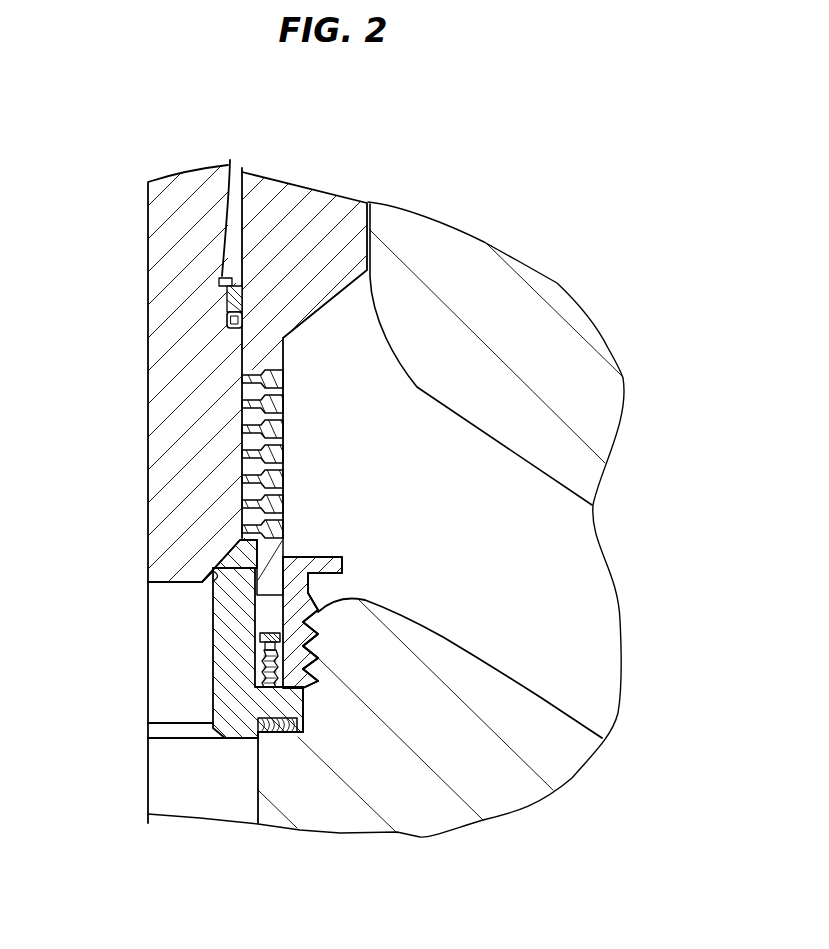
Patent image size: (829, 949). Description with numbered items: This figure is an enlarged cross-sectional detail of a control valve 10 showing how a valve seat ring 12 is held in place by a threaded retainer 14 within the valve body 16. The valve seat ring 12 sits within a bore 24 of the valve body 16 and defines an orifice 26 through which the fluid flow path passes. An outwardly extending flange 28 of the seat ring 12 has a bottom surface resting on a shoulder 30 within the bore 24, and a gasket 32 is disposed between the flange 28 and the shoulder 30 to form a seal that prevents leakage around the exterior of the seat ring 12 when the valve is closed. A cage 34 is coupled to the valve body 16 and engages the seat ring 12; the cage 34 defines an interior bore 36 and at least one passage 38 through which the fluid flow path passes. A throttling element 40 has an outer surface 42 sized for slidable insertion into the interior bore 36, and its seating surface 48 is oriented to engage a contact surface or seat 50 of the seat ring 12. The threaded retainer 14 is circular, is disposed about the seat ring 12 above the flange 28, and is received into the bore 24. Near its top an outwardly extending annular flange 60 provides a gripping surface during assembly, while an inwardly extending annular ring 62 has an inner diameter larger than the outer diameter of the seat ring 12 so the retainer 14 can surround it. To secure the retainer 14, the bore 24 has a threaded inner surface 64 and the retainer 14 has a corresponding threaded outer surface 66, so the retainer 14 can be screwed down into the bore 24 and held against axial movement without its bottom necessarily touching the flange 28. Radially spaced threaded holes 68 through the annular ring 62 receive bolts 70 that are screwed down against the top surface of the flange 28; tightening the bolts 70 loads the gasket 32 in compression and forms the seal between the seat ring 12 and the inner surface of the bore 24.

The control valve 10 is at (565, 167).
The valve seat ring 12 is at (225, 622).
The threaded retainer 14 is at (308, 585).
The valve body 16 is at (571, 313).
The bore 24 is at (258, 798).
The orifice 26 is at (213, 707).
The outwardly extending flange 28 is at (303, 702).
The shoulder 30 is at (278, 735).
The gasket 32 is at (294, 735).
The cage 34 is at (344, 222).
The interior bore 36 is at (240, 188).
The passage 38 is at (273, 402).
The throttling element 40 is at (157, 221).
The outer surface 42 is at (230, 324).
The seating surface 48 is at (220, 565).
The seat 50 is at (215, 588).
The annular flange 60 is at (322, 556).
The annular ring 62 is at (258, 673).
The threaded inner surface 64 is at (318, 648).
The threaded outer surface 66 is at (345, 595).
The threaded holes 68 is at (258, 663).
The bolts 70 is at (260, 637).